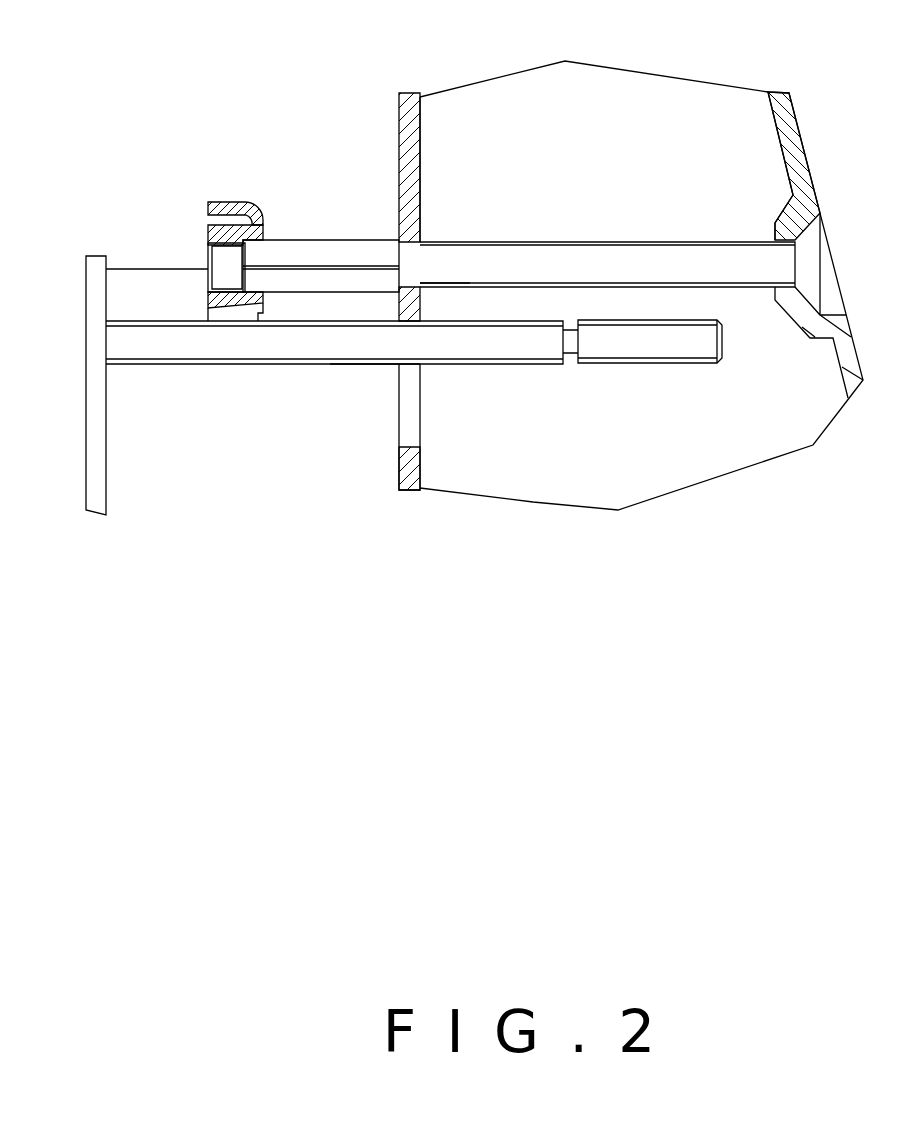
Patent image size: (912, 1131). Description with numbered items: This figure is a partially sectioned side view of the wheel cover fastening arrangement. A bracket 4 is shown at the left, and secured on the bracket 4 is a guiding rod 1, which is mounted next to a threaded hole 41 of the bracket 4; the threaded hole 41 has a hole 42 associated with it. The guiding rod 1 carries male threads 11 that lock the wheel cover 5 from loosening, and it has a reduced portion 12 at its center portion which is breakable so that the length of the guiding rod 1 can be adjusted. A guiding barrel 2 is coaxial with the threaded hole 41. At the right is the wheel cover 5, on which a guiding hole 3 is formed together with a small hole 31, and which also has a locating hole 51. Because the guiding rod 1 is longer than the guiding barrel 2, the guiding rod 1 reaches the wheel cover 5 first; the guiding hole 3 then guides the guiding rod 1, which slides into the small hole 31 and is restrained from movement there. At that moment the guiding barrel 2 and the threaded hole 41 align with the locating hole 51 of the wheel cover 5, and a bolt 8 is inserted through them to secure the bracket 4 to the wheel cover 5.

The guiding rod 1 is at (293, 350).
The male threads 11 is at (353, 366).
The reduced portion 12 is at (570, 362).
The guiding barrel 2 is at (345, 258).
The guiding hole 3 is at (413, 390).
The small hole 31 is at (430, 288).
The bracket 4 is at (95, 452).
The threaded hole 41 is at (233, 254).
The hole 42 is at (263, 303).
The wheel cover 5 is at (407, 150).
The locating hole 51 is at (418, 208).
The bolt 8 is at (678, 270).